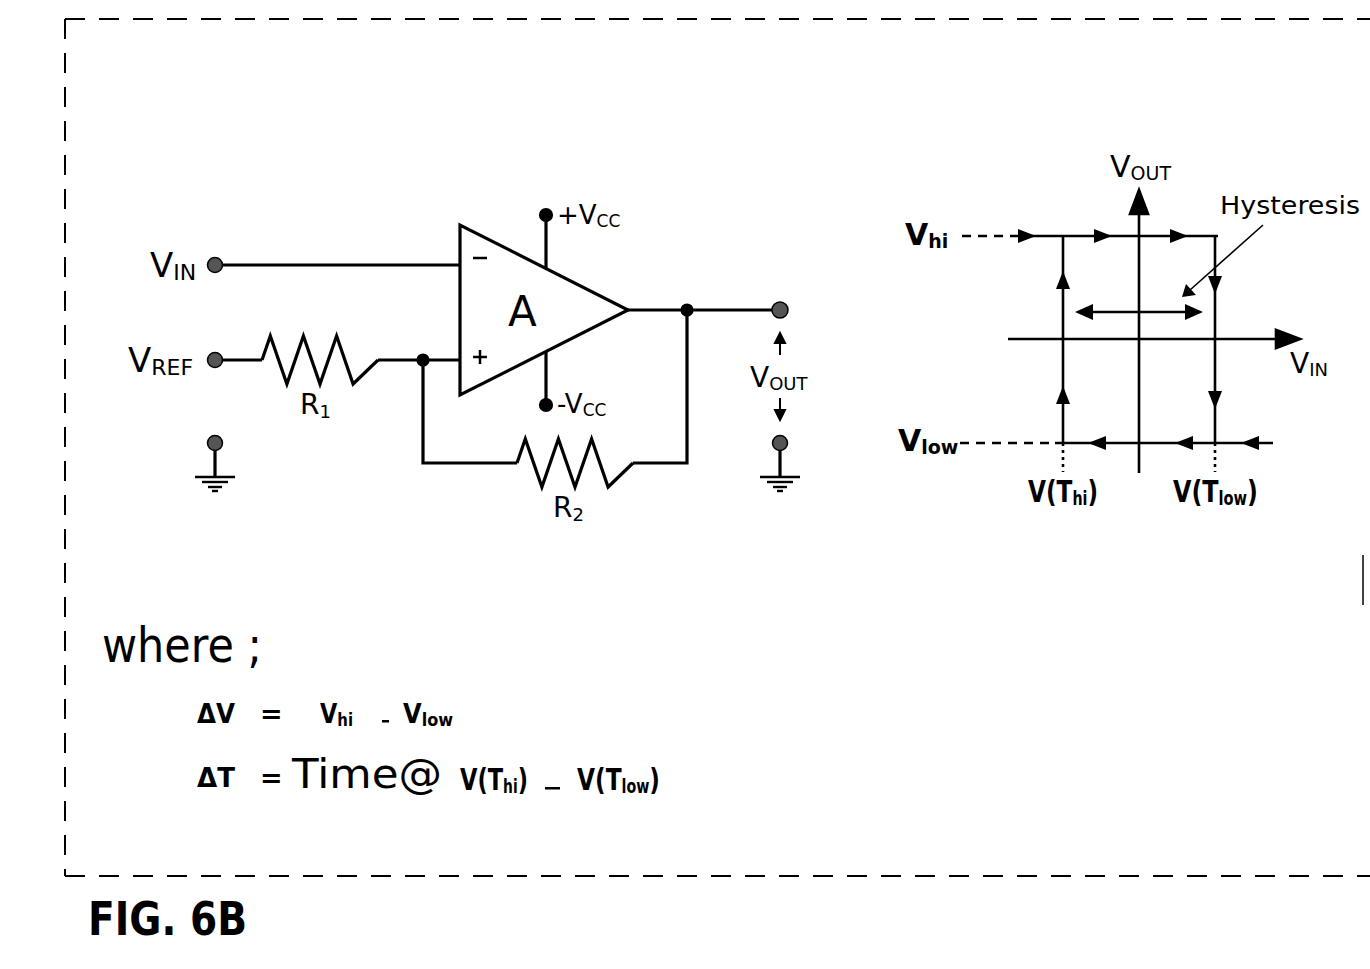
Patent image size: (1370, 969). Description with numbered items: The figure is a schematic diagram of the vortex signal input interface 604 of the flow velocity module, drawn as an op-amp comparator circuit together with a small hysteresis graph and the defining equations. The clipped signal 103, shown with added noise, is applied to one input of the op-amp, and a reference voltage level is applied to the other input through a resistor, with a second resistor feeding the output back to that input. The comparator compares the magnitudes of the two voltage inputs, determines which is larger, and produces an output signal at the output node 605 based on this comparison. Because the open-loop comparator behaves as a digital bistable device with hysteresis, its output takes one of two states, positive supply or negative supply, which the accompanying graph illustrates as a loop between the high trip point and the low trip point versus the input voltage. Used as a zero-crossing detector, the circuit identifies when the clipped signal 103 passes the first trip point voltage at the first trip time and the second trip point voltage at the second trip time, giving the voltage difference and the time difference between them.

The vortex signal input interface 604 is at (717, 447).
The output 605 is at (750, 308).
The clipped signal 103 is at (293, 262).